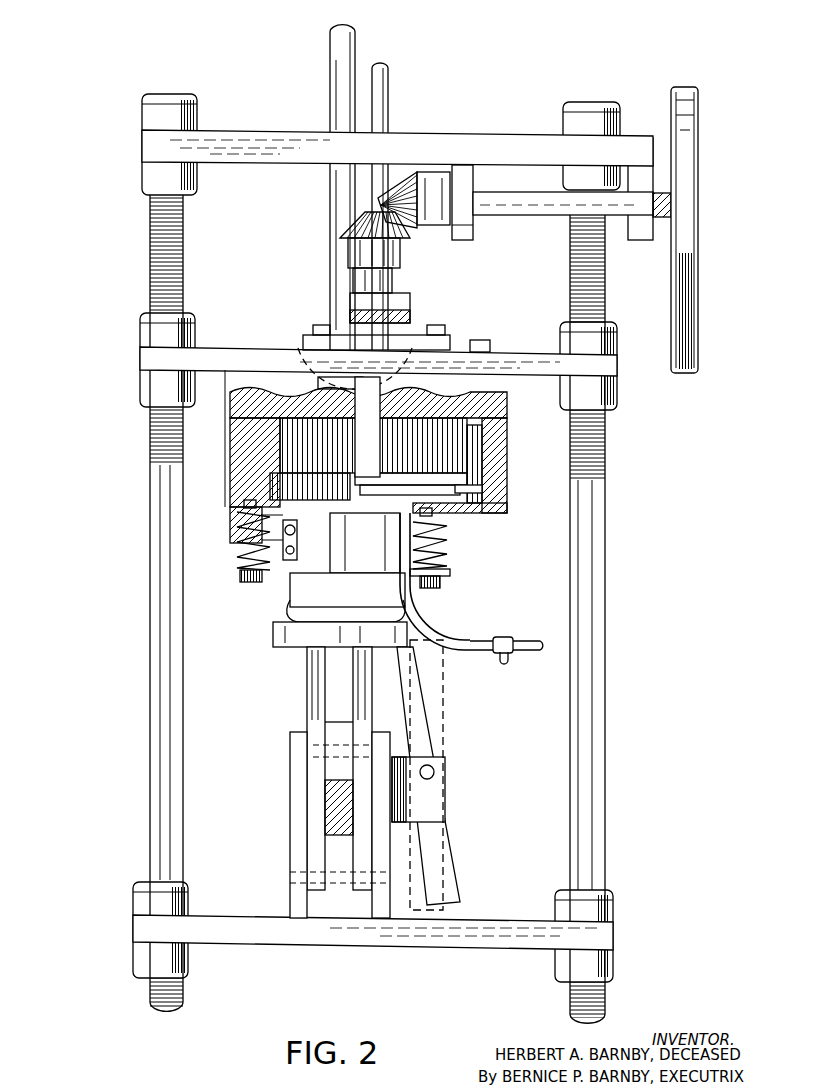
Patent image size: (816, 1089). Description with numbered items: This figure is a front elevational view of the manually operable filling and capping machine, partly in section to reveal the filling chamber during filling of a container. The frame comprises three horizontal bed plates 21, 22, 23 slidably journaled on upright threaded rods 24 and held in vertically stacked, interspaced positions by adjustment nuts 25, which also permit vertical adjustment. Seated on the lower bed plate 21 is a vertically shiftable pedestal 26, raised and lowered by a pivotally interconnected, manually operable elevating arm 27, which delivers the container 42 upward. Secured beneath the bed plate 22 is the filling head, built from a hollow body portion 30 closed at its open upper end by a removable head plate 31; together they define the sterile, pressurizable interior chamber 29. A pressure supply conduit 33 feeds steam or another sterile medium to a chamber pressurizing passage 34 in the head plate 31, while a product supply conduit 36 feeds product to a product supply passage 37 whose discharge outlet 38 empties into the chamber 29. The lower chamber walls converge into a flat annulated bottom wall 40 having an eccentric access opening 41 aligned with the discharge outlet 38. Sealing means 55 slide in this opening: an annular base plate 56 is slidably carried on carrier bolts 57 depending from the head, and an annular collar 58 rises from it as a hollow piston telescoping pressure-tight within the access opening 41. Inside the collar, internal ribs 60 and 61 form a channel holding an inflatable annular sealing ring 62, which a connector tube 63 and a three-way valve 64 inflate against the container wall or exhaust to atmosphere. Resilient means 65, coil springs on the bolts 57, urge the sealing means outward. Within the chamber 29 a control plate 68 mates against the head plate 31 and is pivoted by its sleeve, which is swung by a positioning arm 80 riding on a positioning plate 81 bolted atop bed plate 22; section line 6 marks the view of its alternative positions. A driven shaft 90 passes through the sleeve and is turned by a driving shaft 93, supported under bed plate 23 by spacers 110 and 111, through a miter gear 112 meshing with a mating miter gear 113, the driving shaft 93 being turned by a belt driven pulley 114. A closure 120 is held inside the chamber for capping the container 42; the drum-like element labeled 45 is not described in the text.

The section line 6 is at (208, 438).
The lower bed plate 21 is at (272, 937).
The bed plate 22 is at (242, 368).
The bed plate 23 is at (317, 159).
The threaded rods 24 is at (163, 573).
The adjustment nuts 25 is at (142, 115).
The pedestal 26 is at (333, 645).
The elevating arm 27 is at (340, 833).
The interior chamber 29 is at (478, 488).
The body portion 30 is at (250, 468).
The head plate 31 is at (235, 405).
The pressure supply conduit 33 is at (388, 84).
The chamber pressurizing passage 34 is at (420, 322).
The product supply conduit 36 is at (358, 32).
The product supply passage 37 is at (357, 425).
The discharge outlet 38 is at (330, 386).
The bottom wall 40 is at (470, 515).
The access opening 41 is at (235, 521).
The container 42 is at (340, 602).
The drum 45 is at (350, 487).
The sealing means 55 is at (414, 586).
The annular base plate 56 is at (445, 575).
The carrier bolts 57 is at (245, 583).
The annular collar 58 is at (245, 538).
The internal rib 60 is at (297, 535).
The internal rib 61 is at (292, 560).
The inflatable annular sealing ring 62 is at (395, 570).
The connector tube 63 is at (450, 665).
The 3-way valve 64 is at (505, 665).
The resilient means 65 is at (445, 552).
The control plate 68 is at (492, 470).
The positioning arm 80 is at (410, 312).
The positioning plate 81 is at (445, 347).
The driven shaft 90 is at (393, 280).
The driving shaft 93 is at (523, 199).
The spacer 110 is at (477, 241).
The spacer 111 is at (652, 248).
The miter gear 112 is at (427, 228).
The mating miter gear 113 is at (402, 240).
The belt driven pulley 114 is at (698, 167).
The closure 120 is at (470, 487).